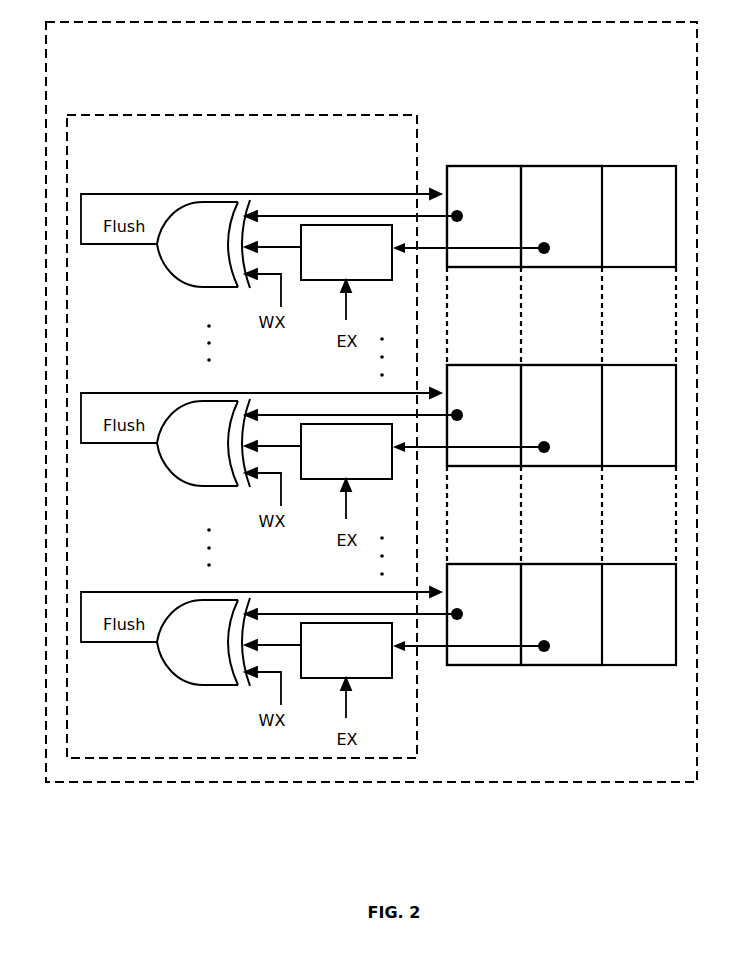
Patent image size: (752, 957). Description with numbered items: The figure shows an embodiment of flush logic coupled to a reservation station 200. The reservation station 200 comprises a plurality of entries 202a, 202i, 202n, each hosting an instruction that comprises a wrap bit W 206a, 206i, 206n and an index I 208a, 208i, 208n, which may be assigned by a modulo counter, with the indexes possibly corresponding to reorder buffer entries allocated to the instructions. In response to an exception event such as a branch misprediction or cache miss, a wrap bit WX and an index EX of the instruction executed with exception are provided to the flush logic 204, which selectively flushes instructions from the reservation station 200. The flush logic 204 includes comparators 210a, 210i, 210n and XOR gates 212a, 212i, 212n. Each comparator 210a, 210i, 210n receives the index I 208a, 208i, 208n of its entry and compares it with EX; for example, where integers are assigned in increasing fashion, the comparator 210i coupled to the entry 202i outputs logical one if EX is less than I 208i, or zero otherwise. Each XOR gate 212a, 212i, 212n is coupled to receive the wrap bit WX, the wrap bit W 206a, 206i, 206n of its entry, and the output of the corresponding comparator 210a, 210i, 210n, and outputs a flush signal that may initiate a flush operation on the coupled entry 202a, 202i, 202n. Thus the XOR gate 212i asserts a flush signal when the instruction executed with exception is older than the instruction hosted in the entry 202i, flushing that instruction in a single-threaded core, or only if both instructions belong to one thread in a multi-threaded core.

The reservation station 200 is at (371, 402).
The flush logic 204 is at (242, 436).
The reservation station entry 202a is at (561, 216).
The reservation station entry 202i is at (561, 415).
The reservation station entry 202n is at (561, 614).
The wrap bit W 206a is at (484, 216).
The wrap bit W 206i is at (484, 415).
The wrap bit W 206n is at (484, 614).
The index I 208a is at (497, 216).
The index I 208i is at (497, 415).
The index I 208n is at (497, 614).
The comparator 210a is at (346, 252).
The comparator 210i is at (346, 451).
The comparator 210n is at (346, 650).
The XOR gate 212a is at (203, 244).
The XOR gate 212i is at (203, 443).
The XOR gate 212n is at (203, 642).